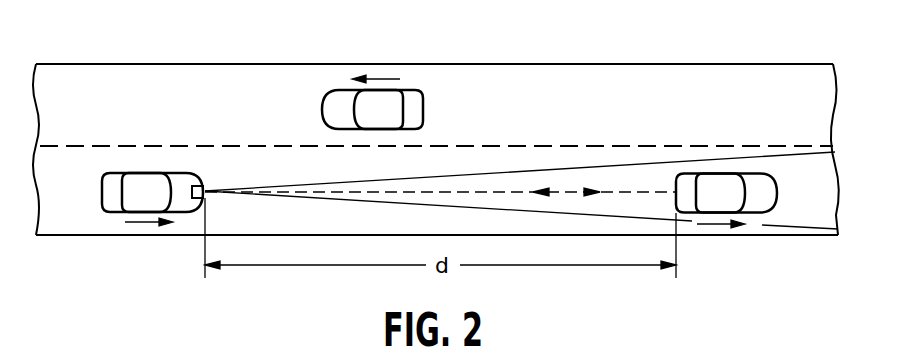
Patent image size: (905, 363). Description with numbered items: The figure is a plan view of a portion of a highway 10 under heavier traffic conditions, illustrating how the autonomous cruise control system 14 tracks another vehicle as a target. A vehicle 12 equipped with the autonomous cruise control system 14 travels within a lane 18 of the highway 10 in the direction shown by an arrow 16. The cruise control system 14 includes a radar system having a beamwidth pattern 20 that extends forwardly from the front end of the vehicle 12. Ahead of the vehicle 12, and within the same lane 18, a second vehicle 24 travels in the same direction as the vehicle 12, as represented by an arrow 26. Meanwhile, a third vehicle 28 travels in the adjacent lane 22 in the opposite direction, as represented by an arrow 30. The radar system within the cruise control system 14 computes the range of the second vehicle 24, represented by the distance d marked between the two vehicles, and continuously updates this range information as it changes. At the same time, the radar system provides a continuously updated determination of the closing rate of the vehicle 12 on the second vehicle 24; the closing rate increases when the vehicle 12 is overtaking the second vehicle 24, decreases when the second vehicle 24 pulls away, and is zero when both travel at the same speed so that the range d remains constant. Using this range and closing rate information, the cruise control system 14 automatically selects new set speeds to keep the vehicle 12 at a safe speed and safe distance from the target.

The highway 10 is at (175, 64).
The vehicle 12 is at (113, 188).
The autonomous cruise control system 14 is at (206, 194).
The arrow 16 is at (143, 223).
The lane 18 is at (60, 225).
The beamwidth pattern 20 is at (786, 226).
The lane 22 is at (735, 78).
The second vehicle 24 is at (768, 186).
The arrow 26 is at (720, 225).
The third vehicle 28 is at (425, 101).
The arrow 30 is at (385, 78).